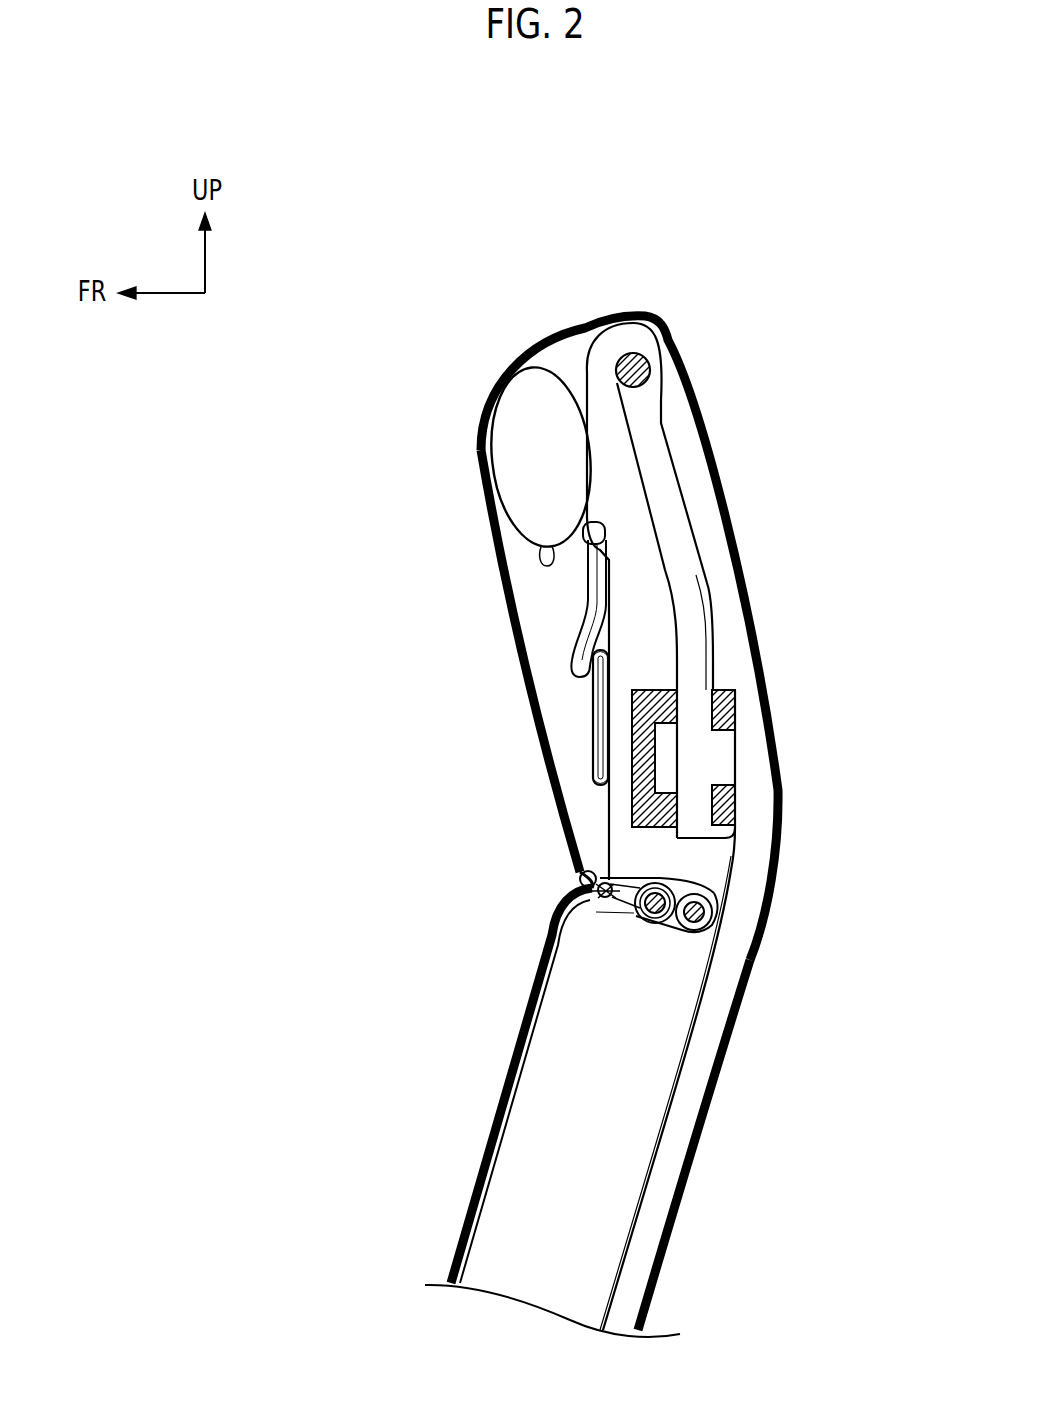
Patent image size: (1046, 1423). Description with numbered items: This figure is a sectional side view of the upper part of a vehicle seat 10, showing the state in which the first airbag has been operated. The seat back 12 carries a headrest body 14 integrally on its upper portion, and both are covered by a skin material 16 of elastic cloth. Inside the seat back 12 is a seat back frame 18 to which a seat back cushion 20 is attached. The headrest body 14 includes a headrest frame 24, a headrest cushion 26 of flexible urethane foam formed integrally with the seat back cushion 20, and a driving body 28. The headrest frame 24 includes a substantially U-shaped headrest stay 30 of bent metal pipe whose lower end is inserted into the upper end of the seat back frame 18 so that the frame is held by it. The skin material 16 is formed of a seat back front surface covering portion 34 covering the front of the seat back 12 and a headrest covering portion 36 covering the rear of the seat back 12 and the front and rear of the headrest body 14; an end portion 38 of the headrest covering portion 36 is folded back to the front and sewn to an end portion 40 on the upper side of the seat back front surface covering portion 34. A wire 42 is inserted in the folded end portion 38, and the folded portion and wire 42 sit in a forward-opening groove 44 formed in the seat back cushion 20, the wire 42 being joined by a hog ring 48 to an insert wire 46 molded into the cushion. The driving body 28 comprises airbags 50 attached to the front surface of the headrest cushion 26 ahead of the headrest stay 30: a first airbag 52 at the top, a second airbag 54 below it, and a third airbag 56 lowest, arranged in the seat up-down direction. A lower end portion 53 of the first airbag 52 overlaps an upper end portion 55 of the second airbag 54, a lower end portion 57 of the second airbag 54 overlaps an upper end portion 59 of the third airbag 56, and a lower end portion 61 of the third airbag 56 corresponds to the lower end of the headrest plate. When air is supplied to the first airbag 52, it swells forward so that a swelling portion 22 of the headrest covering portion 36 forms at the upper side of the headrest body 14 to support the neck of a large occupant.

The vehicle seat 10 is at (684, 284).
The seat back 12 is at (476, 1111).
The headrest body 14 is at (458, 700).
The skin material 16 is at (493, 866).
The seat back frame 18 is at (738, 800).
The seat back cushion 20 is at (497, 1236).
The swelling portion 22 is at (487, 403).
The headrest frame 24 is at (695, 480).
The headrest cushion 26 is at (597, 355).
The driving body 28 is at (506, 550).
The headrest stay 30 is at (650, 410).
The seat back front surface covering portion 34 is at (545, 1025).
The headrest covering portion 36 is at (565, 813).
The end portion 38 is at (584, 883).
The end portion 40 is at (603, 908).
The wire 42 is at (667, 922).
The groove 44 is at (578, 906).
The insert wire 46 is at (712, 918).
The hog ring 48 is at (715, 878).
The airbags 50 is at (506, 582).
The first airbag 52 is at (507, 443).
The lower end portion 53 is at (549, 553).
The second airbag 54 is at (572, 634).
The upper end portion 55 is at (597, 532).
The third airbag 56 is at (590, 700).
The lower end portion 57 is at (566, 666).
The upper end portion 59 is at (608, 645).
The lower end portion 61 is at (593, 782).